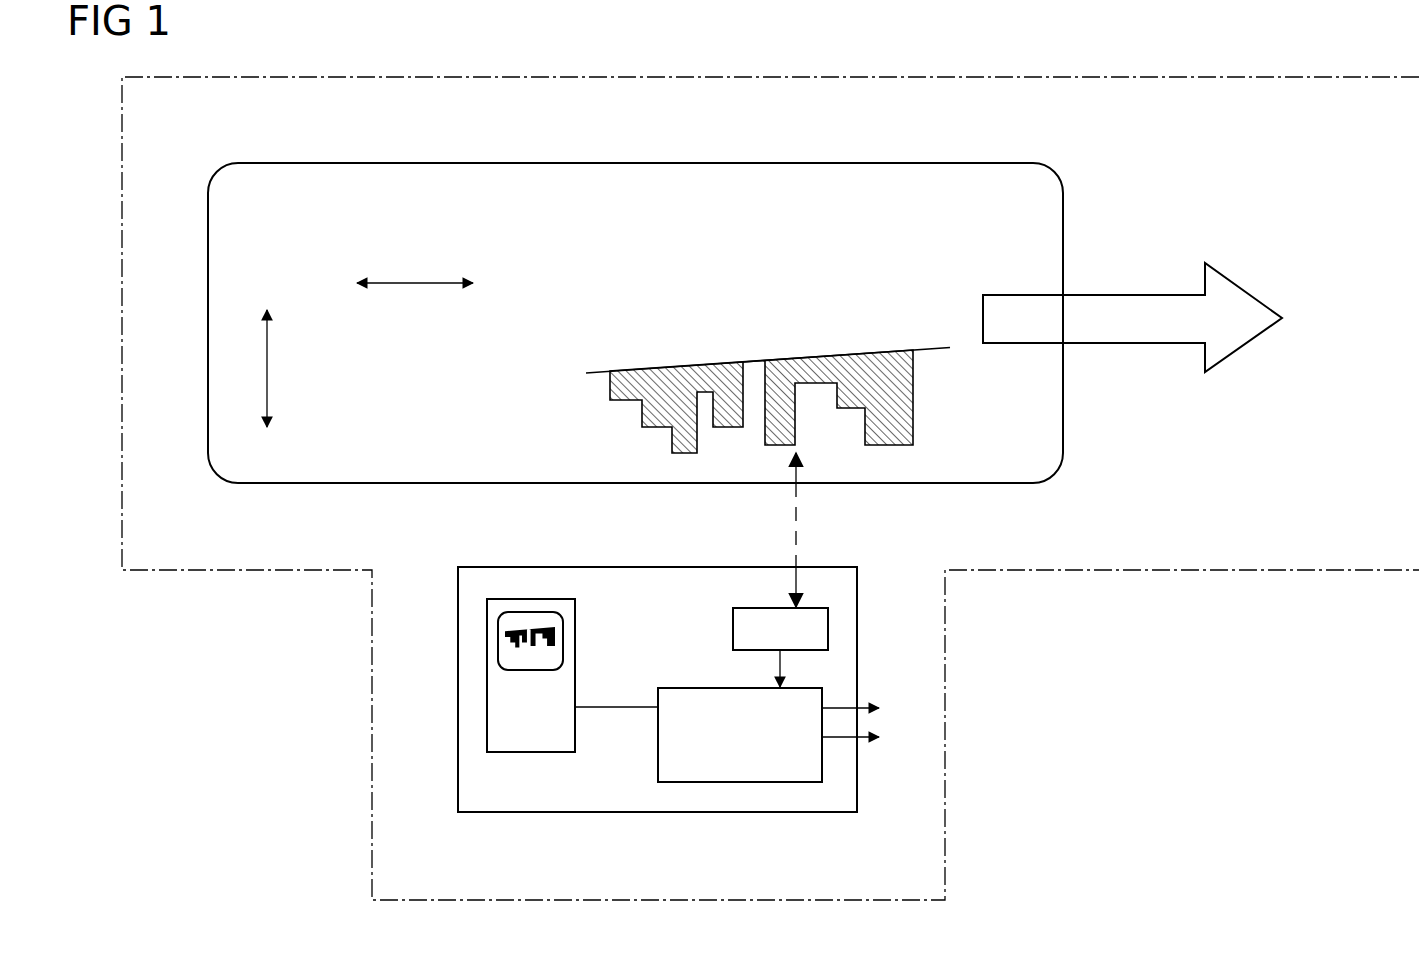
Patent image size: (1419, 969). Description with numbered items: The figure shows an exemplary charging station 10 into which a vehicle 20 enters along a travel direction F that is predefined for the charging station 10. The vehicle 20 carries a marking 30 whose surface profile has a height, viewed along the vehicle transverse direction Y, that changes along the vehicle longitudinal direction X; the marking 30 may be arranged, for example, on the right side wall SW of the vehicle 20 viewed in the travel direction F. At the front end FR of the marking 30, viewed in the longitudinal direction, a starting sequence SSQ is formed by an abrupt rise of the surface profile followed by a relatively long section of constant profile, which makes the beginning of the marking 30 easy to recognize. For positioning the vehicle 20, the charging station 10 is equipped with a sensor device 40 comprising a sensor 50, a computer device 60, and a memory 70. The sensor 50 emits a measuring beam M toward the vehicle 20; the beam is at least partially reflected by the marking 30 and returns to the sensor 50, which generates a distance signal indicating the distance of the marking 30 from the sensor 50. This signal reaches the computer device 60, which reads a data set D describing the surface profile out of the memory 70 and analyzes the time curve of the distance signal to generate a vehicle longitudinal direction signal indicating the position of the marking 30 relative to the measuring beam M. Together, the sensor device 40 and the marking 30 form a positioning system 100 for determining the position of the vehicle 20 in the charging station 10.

The positioning system 100 is at (274, 602).
The charging station 10 is at (1140, 572).
The vehicle 20 is at (635, 347).
The marking 30 is at (885, 350).
The sensor device 40 is at (557, 812).
The sensor 50 is at (828, 625).
The computer device 60 is at (710, 782).
The memory 70 is at (487, 713).
The data set D is at (498, 655).
The starting sequence SSQ is at (913, 393).
The front end FR is at (912, 445).
The measuring beam M is at (794, 530).
The travel direction F is at (1125, 295).
The vehicle longitudinal direction X is at (417, 283).
The vehicle transverse direction Y is at (267, 373).
The side wall SW is at (500, 447).